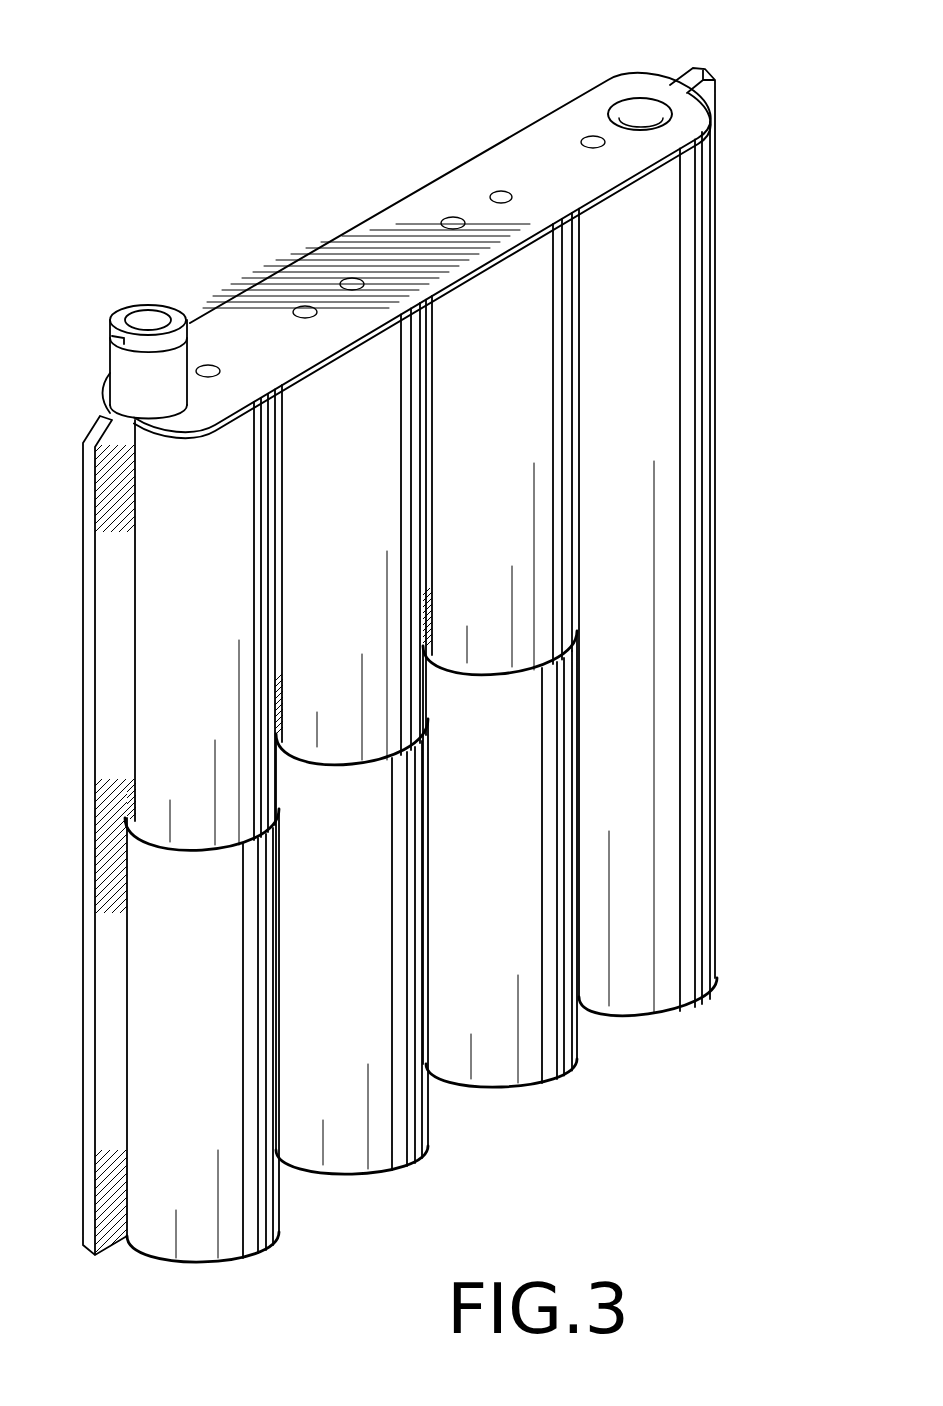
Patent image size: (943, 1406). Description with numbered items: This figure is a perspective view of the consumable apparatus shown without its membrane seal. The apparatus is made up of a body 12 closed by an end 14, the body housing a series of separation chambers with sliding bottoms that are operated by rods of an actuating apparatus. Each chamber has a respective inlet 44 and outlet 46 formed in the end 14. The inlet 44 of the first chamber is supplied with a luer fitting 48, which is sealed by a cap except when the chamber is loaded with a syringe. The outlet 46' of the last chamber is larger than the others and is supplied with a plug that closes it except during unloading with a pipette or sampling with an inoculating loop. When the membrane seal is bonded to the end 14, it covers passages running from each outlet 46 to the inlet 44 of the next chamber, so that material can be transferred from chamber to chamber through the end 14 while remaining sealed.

The body 12 is at (714, 726).
The end 14 is at (688, 153).
The inlet 44 is at (304, 306).
The outlet 46 is at (286, 213).
The outlet 46' is at (612, 73).
The luer fitting 48 is at (112, 316).